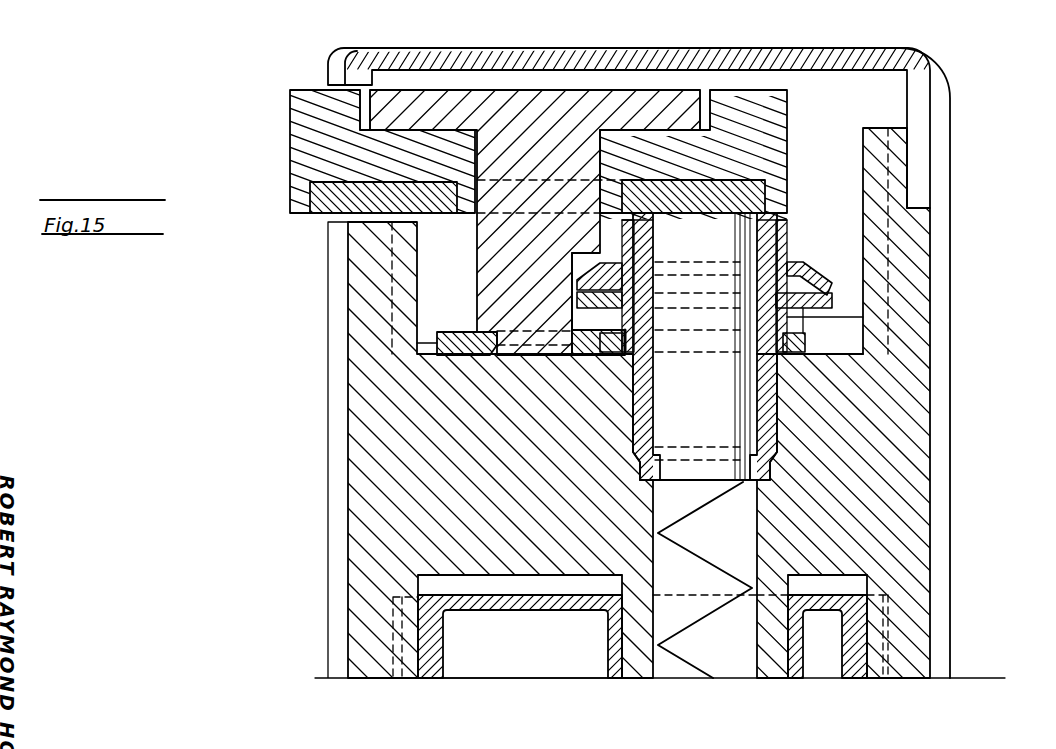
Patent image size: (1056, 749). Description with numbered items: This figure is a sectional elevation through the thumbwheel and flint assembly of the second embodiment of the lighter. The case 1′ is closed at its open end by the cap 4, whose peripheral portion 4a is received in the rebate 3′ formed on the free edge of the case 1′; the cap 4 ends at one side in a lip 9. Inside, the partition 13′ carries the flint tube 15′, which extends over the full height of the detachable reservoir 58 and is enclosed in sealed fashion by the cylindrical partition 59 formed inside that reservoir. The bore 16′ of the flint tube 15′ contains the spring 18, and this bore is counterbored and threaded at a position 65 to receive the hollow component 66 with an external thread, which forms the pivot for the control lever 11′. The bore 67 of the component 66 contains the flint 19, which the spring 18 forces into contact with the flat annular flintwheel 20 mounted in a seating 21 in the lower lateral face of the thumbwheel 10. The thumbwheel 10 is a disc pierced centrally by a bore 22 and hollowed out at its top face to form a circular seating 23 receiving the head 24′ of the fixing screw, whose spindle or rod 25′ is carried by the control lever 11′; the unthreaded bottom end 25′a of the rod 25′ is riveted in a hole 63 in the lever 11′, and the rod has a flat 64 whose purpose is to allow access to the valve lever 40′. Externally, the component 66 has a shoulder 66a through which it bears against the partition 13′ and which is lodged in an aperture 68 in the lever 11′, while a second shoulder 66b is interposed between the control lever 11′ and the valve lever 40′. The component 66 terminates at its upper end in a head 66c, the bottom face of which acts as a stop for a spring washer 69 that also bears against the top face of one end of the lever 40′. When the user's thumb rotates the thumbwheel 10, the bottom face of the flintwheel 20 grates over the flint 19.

The case 1′ is at (905, 288).
The rebate 3′ is at (907, 150).
The cap 4 is at (799, 49).
The peripheral portion of the cap 4a is at (935, 66).
The cap lip 9 is at (343, 84).
The thumbwheel 10 is at (312, 129).
The control lever 11′ is at (437, 343).
The partition 13′ is at (400, 492).
The flint tube 15′ is at (637, 634).
The bore of the flint tube 16′ is at (760, 518).
The spring 18 is at (690, 518).
The flint 19 is at (697, 361).
The flintwheel 20 is at (325, 196).
The seating 21 is at (757, 183).
The bore 22 is at (600, 160).
The circular seating 23 is at (705, 96).
The head 24′ is at (457, 108).
The spindle 25′ is at (518, 247).
The bottom end of the rod 25′a is at (533, 350).
The valve lever 40′ is at (833, 297).
The detachable reservoir 58 is at (502, 612).
The cylindrical partition 59 is at (615, 668).
The hole 63 is at (500, 333).
The flat 64 is at (580, 268).
The counterbored and threaded position 65 is at (772, 457).
The hollow component 66 is at (775, 395).
The shoulder 66a is at (795, 339).
The second shoulder 66b is at (803, 317).
The head 66c is at (765, 240).
The bore of the component 67 is at (785, 221).
The aperture 68 is at (785, 354).
The spring washer 69 is at (812, 266).